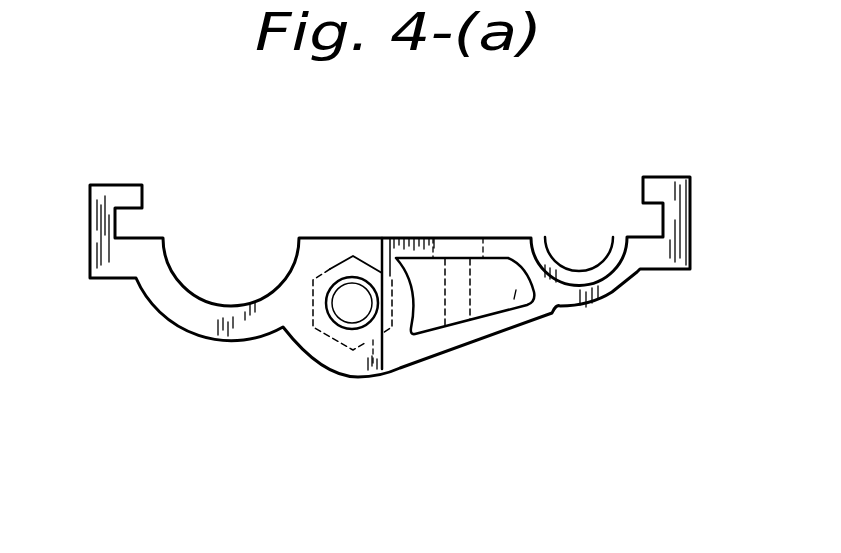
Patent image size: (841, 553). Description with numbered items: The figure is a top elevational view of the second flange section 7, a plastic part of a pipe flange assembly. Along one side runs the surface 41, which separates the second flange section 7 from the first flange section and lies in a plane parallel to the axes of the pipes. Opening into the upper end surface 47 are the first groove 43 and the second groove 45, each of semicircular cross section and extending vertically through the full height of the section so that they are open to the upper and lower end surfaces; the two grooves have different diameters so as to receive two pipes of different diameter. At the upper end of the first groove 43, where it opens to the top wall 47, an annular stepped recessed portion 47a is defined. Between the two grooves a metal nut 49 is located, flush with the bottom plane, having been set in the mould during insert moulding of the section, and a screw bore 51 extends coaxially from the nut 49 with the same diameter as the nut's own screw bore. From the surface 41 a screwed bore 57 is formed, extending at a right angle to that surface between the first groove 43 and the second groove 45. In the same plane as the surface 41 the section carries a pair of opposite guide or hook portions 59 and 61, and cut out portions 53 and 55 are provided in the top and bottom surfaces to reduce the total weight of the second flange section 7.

The second flange section 7 is at (391, 323).
The surface 41 is at (407, 237).
The first groove 43 is at (228, 304).
The second groove 45 is at (572, 267).
The upper end surface 47 is at (369, 249).
The annular stepped recessed portion 47a is at (184, 294).
The nut 49 is at (315, 370).
The screw bore 51 is at (347, 290).
The cut out portion 53 is at (487, 300).
The cut out portion 55 is at (543, 318).
The screwed bore 57 is at (462, 308).
The guide or hook portion 59 is at (92, 231).
The guide or hook portion 61 is at (692, 227).